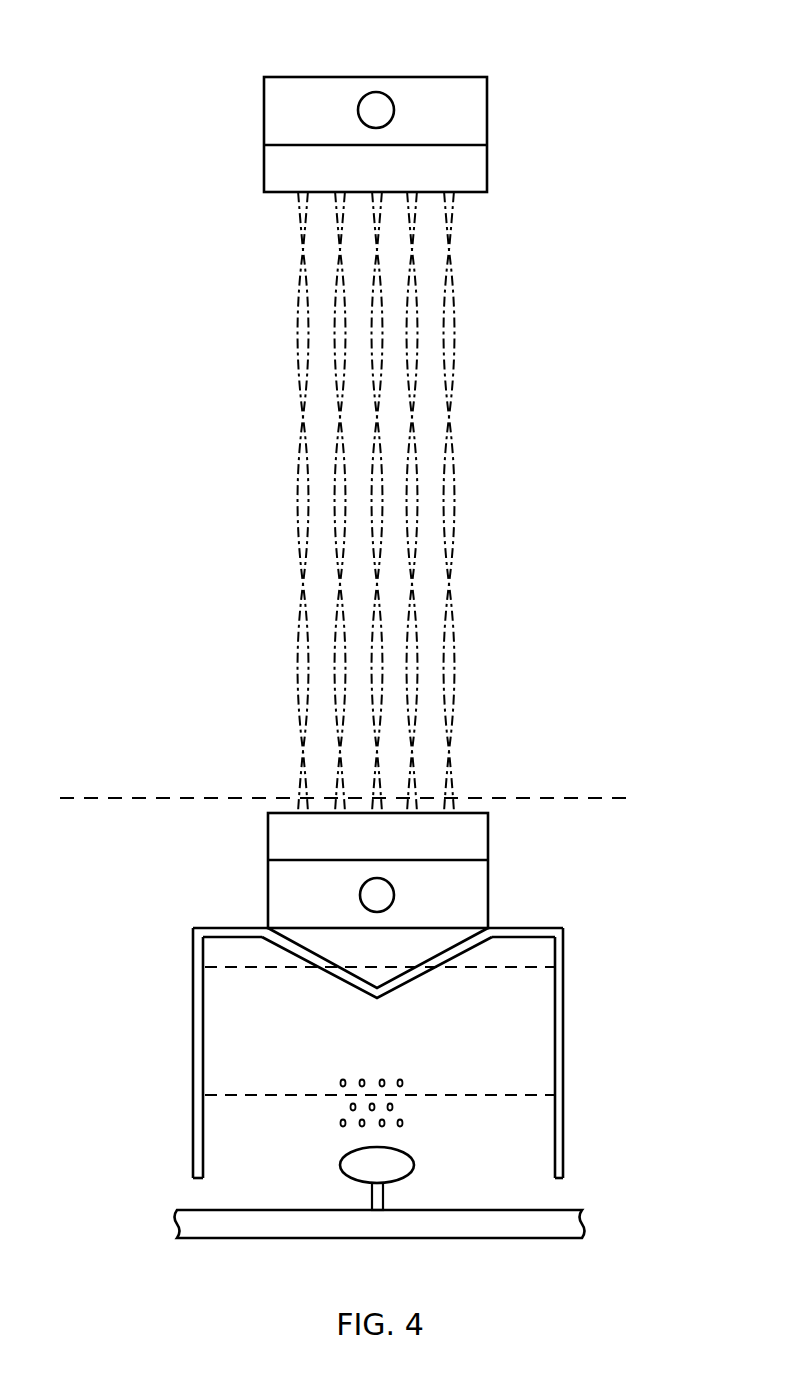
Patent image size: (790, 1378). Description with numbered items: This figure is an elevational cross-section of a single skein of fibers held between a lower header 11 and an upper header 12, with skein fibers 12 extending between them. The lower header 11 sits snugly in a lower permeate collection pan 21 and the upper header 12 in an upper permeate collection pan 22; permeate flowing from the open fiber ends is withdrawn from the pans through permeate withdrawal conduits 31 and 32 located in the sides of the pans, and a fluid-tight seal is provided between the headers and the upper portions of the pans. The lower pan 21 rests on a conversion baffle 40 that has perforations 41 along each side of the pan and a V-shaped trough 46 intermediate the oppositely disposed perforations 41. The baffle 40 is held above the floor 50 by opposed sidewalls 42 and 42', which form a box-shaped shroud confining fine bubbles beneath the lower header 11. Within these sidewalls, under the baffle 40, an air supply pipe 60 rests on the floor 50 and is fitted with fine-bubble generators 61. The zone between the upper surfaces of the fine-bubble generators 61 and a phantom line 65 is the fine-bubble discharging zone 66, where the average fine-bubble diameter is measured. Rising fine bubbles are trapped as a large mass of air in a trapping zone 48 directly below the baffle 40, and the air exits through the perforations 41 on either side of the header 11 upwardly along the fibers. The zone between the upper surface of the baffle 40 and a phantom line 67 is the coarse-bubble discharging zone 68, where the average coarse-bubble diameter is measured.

The lower header 11 is at (268, 838).
The upper header 12 is at (487, 172).
The lower permeate collection pan 21 is at (268, 897).
The upper permeate collection pan 22 is at (264, 103).
The permeate withdrawal conduit 31 is at (394, 893).
The permeate withdrawal conduit 32 is at (376, 92).
The conversion baffle 40 is at (552, 928).
The perforations 41 is at (238, 937).
The sidewall 42 is at (594, 1053).
The sidewall 42' is at (239, 1053).
The V-shaped trough 46 is at (375, 997).
The trapping zone 48 is at (547, 950).
The floor 50 is at (578, 1210).
The air supply pipe 60 is at (384, 1203).
The fine-bubble generator 61 is at (340, 1168).
The phantom line 65 is at (453, 1095).
The fine-bubble discharging zone 66 is at (225, 1143).
The phantom line 67 is at (630, 797).
The coarse-bubble discharging zone 68 is at (160, 879).